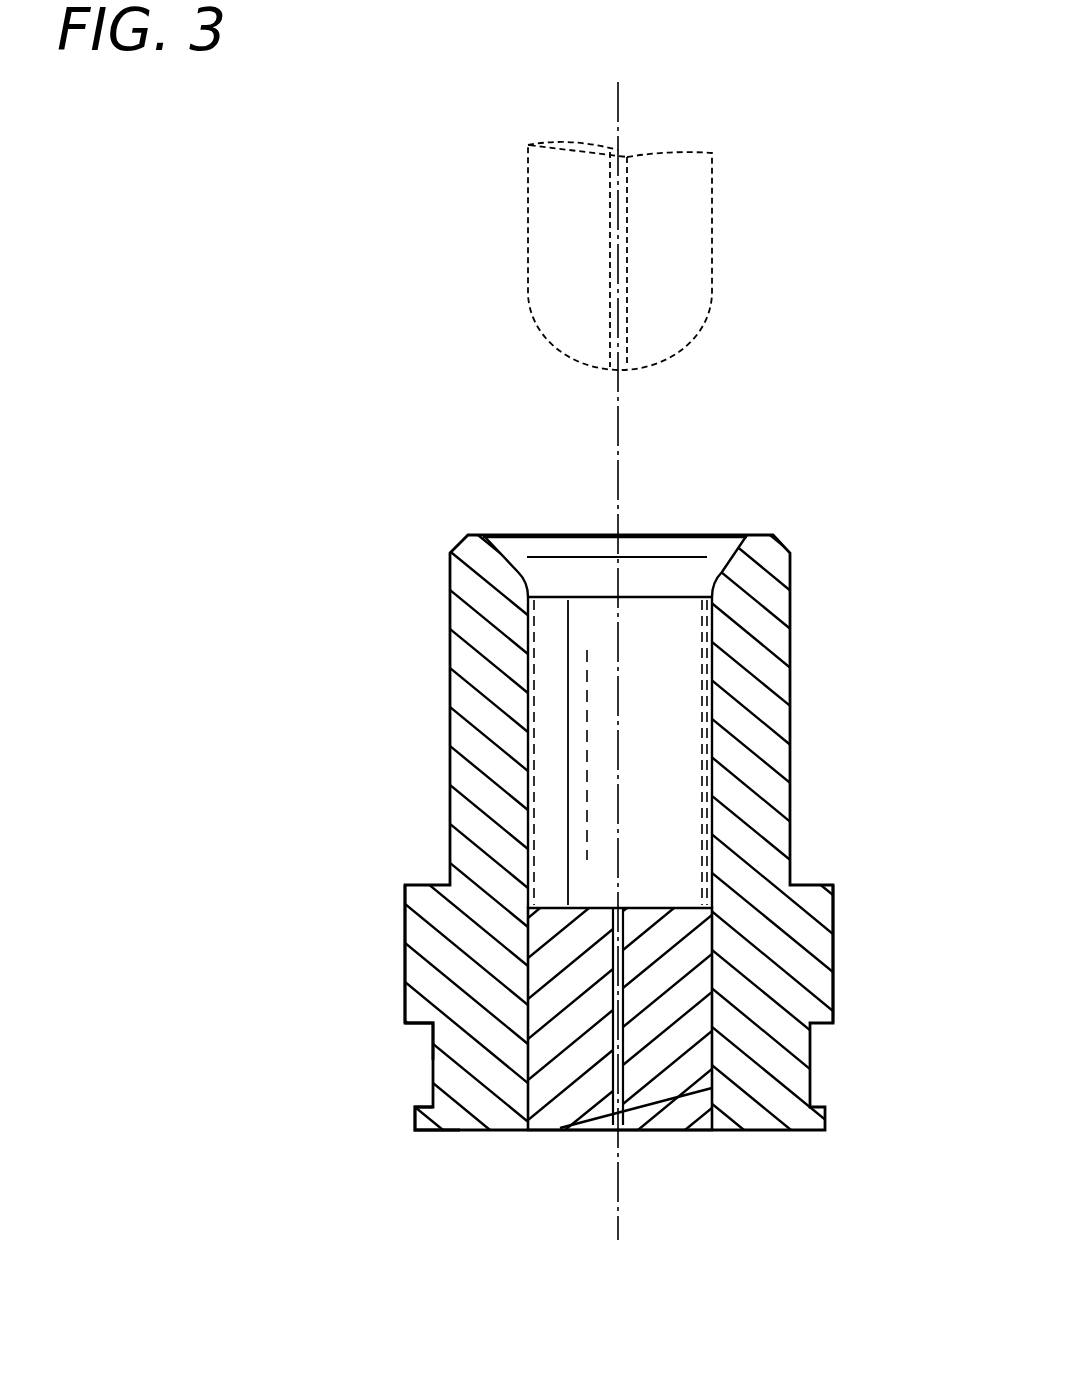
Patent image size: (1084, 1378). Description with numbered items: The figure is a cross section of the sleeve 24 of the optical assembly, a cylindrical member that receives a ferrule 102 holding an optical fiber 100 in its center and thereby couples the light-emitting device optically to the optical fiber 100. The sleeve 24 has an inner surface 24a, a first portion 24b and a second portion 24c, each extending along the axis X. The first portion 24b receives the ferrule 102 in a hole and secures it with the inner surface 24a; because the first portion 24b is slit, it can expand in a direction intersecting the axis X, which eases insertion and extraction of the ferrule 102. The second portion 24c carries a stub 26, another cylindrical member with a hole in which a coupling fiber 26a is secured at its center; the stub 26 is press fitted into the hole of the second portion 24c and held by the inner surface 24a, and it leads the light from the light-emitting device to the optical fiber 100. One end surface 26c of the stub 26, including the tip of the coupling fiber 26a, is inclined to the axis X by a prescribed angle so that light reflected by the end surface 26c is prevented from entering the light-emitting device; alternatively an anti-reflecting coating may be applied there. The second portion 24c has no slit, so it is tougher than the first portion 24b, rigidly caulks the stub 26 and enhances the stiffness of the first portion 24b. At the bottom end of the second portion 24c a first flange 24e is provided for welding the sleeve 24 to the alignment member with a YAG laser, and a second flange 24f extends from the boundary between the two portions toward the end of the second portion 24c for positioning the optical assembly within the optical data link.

The axis X is at (620, 128).
The optical fiber 100 is at (628, 288).
The ferrule 102 is at (698, 222).
The sleeve 24 is at (629, 814).
The inner surface 24a is at (688, 598).
The first portion 24b is at (816, 535).
The second portion 24c is at (852, 885).
The first flange 24e is at (415, 1120).
The second flange 24f is at (417, 999).
The stub 26 is at (670, 1066).
The coupling fiber 26a is at (625, 1105).
The end surface 26c is at (675, 1103).